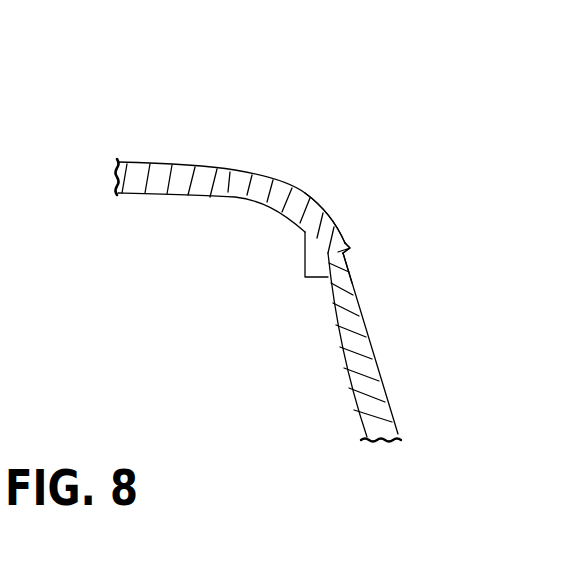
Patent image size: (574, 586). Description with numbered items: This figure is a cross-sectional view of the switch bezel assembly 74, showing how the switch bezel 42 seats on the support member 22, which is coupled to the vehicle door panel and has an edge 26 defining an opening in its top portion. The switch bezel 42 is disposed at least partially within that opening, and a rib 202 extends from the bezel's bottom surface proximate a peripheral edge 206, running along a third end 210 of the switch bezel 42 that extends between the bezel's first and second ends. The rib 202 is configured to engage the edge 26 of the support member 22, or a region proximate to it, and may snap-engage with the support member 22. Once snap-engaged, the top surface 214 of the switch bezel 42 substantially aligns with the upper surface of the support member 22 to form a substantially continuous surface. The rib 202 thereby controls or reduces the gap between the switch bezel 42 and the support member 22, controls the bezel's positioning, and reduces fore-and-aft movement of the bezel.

The switch bezel 42 is at (142, 172).
The top surface 214 is at (223, 167).
The assembly 74 is at (290, 121).
The third end 210 is at (320, 200).
The peripheral edge 206 is at (337, 252).
The edge 26 is at (343, 252).
The rib 202 is at (315, 265).
The support member 22 is at (377, 422).